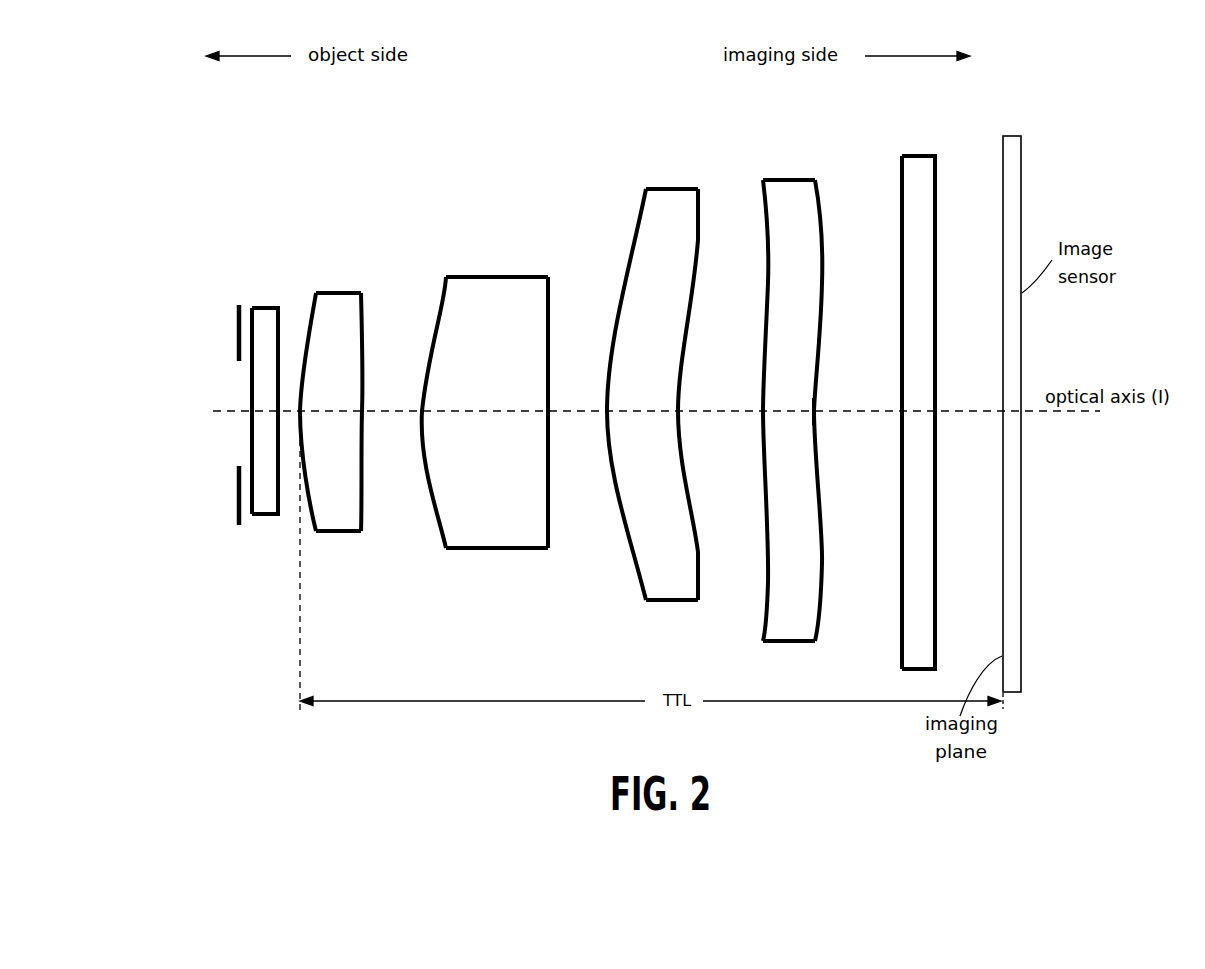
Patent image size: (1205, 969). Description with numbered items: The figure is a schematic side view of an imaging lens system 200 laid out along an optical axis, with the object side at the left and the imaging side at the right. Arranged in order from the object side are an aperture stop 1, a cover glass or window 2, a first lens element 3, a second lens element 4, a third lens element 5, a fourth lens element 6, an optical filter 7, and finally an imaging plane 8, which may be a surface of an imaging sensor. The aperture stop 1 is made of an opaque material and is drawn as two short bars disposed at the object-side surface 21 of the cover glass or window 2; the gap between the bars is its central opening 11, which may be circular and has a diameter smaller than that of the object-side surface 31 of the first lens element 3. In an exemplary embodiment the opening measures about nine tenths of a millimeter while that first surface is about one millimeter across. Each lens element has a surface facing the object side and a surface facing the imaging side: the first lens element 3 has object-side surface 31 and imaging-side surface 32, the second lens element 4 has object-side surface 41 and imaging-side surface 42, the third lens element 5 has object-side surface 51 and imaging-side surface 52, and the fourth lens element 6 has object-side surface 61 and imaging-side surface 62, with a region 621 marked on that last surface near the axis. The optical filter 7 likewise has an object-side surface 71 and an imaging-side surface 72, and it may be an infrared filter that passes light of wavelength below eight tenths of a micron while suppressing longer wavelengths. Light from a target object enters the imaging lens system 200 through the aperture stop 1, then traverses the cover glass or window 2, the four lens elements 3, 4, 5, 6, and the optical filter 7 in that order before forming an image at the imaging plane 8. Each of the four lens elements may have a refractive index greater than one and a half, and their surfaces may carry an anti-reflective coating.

The imaging lens system 200 is at (523, 157).
The aperture stop 1 is at (209, 389).
The central opening 11 is at (235, 392).
The cover glass or window 2 is at (252, 392).
The object-side surface of cover glass or window 21 is at (248, 432).
The first lens element 3 is at (331, 426).
The object-side surface of first lens element 31 is at (310, 517).
The imaging-side surface of first lens element 32 is at (362, 515).
The second lens element 4 is at (487, 393).
The object-side surface of second lens element 41 is at (427, 468).
The imaging-side surface of second lens element 42 is at (548, 487).
The third lens element 5 is at (651, 371).
The object-side surface of third lens element 51 is at (627, 278).
The imaging-side surface of third lens element 52 is at (679, 359).
The fourth lens element 6 is at (805, 395).
The object-side surface of fourth lens element 61 is at (760, 480).
The imaging-side surface of fourth lens element 62 is at (844, 419).
The optical axis region of image-side surface of fifth lens element 621 is at (813, 410).
The optical filter 7 is at (923, 391).
The object-side surface of optical filter 71 is at (897, 515).
The imaging-side surface of optical filter 72 is at (935, 546).
The imaging plane 8 is at (1000, 158).